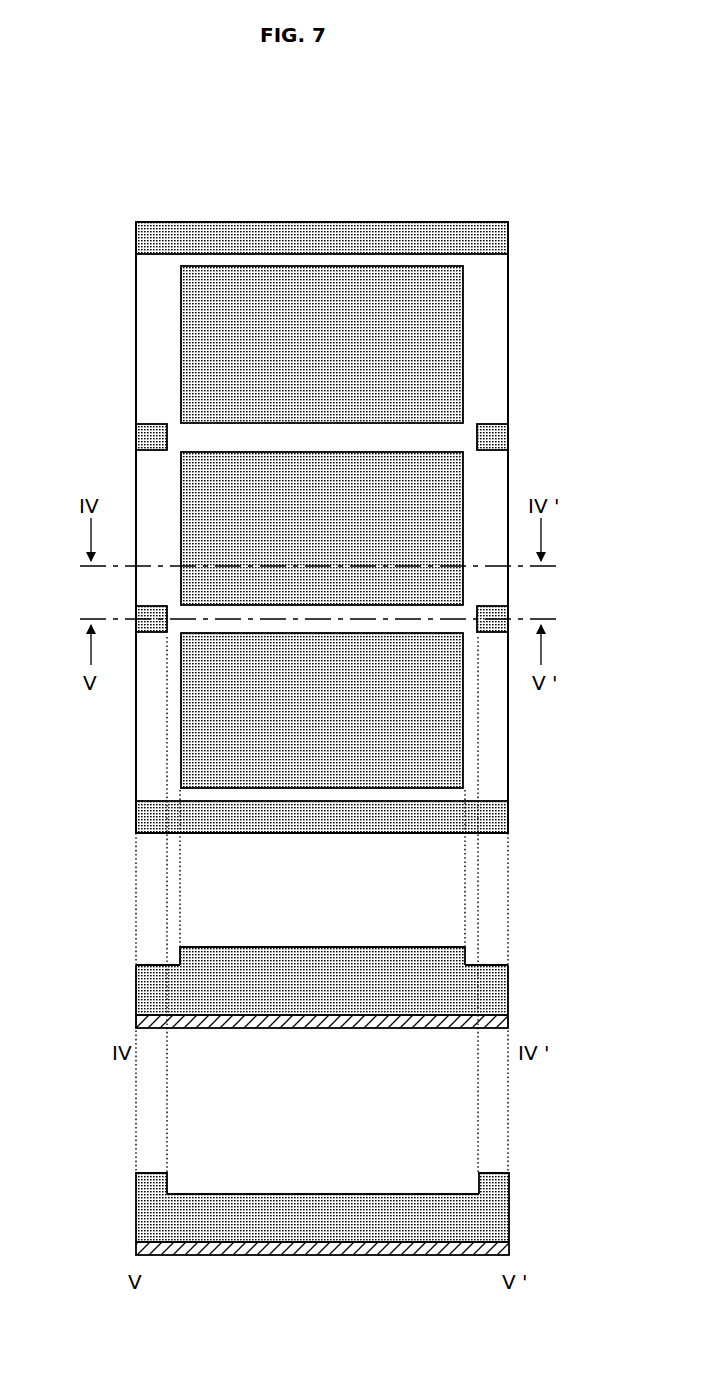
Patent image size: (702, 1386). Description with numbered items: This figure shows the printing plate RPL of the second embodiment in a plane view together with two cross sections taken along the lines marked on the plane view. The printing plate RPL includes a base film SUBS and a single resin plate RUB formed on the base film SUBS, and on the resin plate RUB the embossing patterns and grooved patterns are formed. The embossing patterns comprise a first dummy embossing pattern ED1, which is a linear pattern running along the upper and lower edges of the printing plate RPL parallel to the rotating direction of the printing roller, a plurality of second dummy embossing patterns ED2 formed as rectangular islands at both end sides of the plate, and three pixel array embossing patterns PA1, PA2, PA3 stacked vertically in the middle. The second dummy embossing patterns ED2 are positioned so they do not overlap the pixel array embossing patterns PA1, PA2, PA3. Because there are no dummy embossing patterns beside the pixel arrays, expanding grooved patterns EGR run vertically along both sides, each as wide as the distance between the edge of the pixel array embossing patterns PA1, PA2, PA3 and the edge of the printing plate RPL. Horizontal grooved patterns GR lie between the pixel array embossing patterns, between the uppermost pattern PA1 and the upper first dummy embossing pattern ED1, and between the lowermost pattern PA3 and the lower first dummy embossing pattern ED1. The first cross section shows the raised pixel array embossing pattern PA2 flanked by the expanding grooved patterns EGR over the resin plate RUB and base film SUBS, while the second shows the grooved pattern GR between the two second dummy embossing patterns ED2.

The printing plate RPL is at (126, 204).
The first dummy embossing pattern ED1 is at (318, 245).
The second dummy embossing pattern ED2 is at (142, 437).
The expanding grooved pattern EGR is at (150, 301).
The pixel array embossing pattern PA1 is at (322, 344).
The pixel array embossing pattern PA2 is at (300, 945).
The pixel array embossing pattern PA3 is at (322, 710).
The resin plate RUB is at (300, 1000).
The base film SUBS is at (455, 1020).
The grooved pattern GR is at (300, 1192).